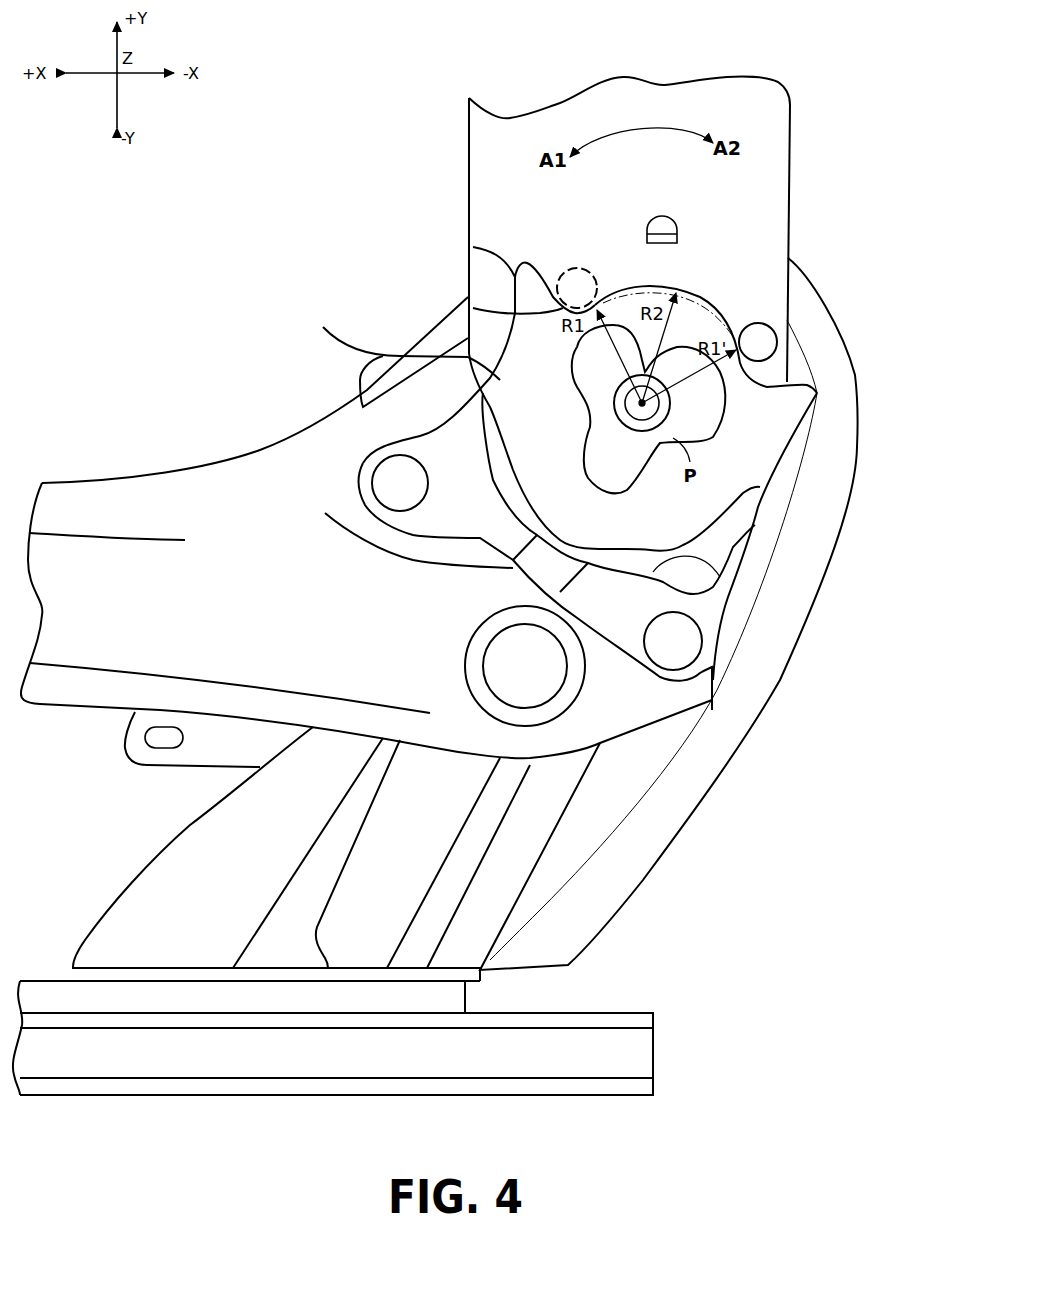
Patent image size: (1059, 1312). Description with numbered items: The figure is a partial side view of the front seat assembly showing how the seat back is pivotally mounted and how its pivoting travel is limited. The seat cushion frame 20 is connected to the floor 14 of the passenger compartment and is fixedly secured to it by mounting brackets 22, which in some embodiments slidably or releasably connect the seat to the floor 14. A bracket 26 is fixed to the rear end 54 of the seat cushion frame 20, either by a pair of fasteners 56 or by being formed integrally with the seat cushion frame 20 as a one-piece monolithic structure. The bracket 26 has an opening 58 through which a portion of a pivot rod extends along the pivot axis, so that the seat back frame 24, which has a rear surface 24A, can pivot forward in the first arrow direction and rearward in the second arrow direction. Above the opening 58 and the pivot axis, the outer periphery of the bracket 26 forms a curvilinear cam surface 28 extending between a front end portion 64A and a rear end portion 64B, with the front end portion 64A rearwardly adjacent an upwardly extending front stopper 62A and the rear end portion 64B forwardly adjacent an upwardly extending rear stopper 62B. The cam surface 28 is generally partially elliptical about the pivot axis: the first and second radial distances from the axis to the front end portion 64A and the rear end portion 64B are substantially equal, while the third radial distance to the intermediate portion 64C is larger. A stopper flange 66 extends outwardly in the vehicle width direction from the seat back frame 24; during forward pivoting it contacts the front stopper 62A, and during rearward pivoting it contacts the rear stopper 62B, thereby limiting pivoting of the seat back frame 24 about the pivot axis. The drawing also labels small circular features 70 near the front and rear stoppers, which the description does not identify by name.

The floor 14 is at (43, 975).
The seat cushion frame 20 is at (163, 474).
The mounting brackets 22 is at (170, 845).
The seat back frame 24 is at (795, 203).
The rear surface 24A is at (792, 133).
The bracket 26 is at (513, 516).
The cam surface 28 is at (703, 300).
The rear end 54 is at (713, 682).
The fasteners 56 is at (368, 483).
The opening 58 is at (635, 463).
The front stopper 62A is at (473, 247).
The rear stopper 62B is at (820, 394).
The front end portion 64A is at (473, 308).
The rear end portion 64B is at (778, 367).
The intermediate portion 64C is at (687, 285).
The stopper flange 66 is at (660, 216).
The stop pins 70 is at (572, 267).